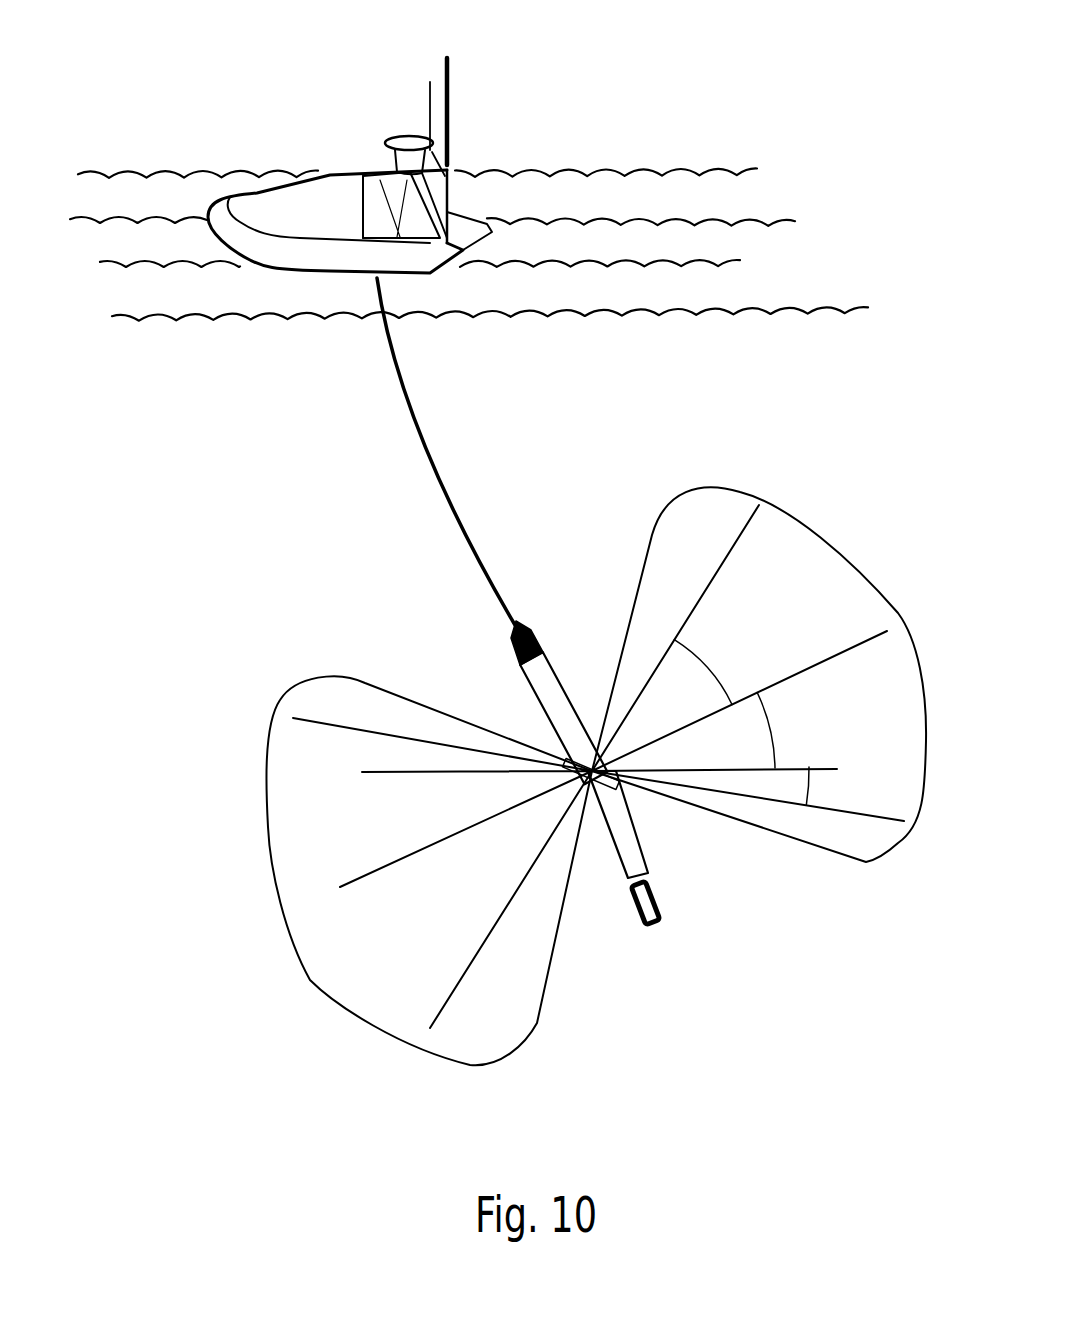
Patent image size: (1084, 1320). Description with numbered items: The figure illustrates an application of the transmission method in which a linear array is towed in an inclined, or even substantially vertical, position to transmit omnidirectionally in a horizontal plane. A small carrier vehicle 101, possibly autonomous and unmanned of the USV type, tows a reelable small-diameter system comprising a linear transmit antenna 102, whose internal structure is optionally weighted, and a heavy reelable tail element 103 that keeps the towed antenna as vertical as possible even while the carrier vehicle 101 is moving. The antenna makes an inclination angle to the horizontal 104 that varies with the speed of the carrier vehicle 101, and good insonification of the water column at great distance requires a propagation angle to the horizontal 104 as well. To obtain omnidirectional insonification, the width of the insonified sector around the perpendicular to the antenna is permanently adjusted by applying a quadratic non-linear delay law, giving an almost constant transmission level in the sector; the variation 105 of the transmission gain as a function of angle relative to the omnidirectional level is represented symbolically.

The carrier vehicle 101 is at (330, 200).
The linear transmit antenna 102 is at (620, 853).
The heavy reelable tail element 103 is at (657, 903).
The horizontal 104 is at (413, 773).
The variation of the transmission gain 105 is at (821, 534).